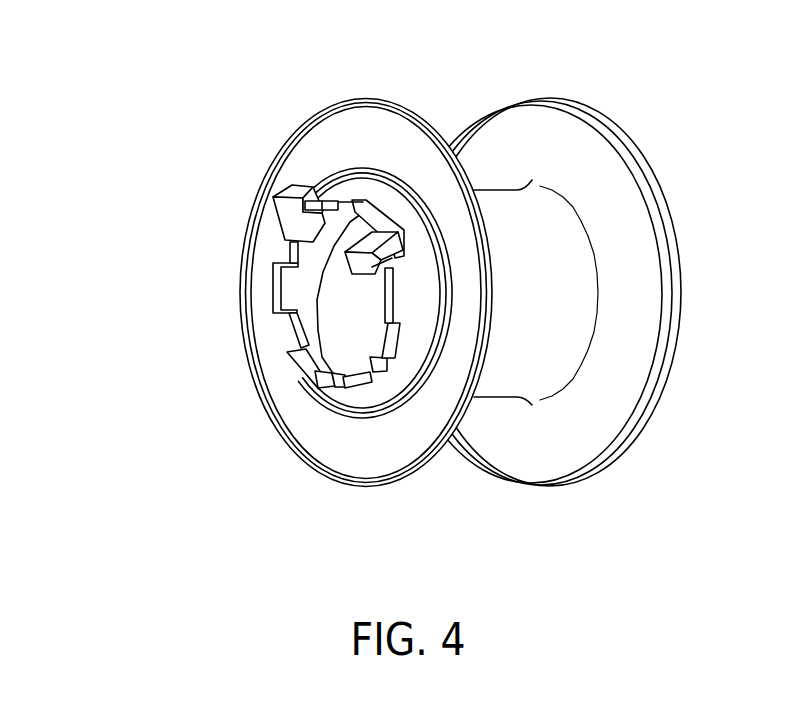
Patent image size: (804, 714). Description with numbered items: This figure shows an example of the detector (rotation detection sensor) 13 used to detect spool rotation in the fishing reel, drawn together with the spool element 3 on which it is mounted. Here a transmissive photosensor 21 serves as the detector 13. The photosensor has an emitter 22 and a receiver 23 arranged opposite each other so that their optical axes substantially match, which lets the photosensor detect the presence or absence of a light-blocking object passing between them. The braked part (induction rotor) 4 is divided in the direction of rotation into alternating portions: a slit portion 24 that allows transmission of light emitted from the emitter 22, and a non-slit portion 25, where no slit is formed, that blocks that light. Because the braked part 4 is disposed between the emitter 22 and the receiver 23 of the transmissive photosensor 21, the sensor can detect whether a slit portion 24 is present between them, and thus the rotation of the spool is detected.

The reel (spool) flange 3 is at (328, 133).
The braked part (induction rotor) 4 is at (370, 380).
The detector (rotation detection sensor) 13 is at (219, 208).
The transmissive photosensor 21 is at (220, 229).
The emitter 22 is at (334, 205).
The receiver 23 is at (353, 253).
The slit portion 24 is at (278, 258).
The non-slit portion 25 is at (402, 288).